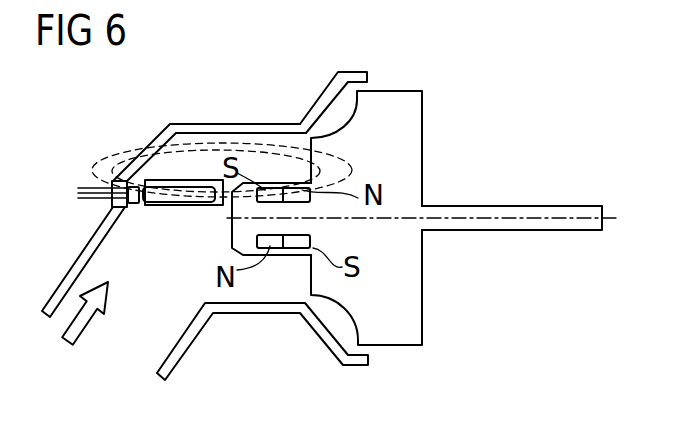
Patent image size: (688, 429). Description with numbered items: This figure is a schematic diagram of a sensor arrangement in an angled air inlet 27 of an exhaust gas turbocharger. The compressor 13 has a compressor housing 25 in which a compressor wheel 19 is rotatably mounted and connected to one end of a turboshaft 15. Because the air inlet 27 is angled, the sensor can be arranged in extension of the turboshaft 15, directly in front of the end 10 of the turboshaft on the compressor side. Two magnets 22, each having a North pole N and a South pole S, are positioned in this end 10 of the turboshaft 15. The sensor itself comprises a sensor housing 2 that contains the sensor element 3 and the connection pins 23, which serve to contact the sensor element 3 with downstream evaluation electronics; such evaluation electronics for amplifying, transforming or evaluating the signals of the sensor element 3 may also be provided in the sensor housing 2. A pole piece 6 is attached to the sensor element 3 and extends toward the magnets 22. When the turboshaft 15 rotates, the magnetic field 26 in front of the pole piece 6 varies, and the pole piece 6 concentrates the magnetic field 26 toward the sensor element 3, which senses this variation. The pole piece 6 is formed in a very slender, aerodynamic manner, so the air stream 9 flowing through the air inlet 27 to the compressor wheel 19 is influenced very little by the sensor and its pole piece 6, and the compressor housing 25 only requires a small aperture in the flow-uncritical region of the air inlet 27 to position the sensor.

The sensor housing 2 is at (116, 181).
The sensor element 3 is at (135, 204).
The pole piece 6 is at (180, 205).
The air stream 9 is at (72, 330).
The end of the turboshaft on the compressor side 10 is at (216, 243).
The compressor 13 is at (260, 76).
The turboshaft 15 is at (560, 212).
The compressor wheel 19 is at (400, 112).
The magnets 22 is at (313, 202).
The connection pins 23 is at (88, 204).
The compressor housing 25 is at (354, 72).
The magnetic field 26 is at (216, 143).
The air inlet 27 is at (124, 339).